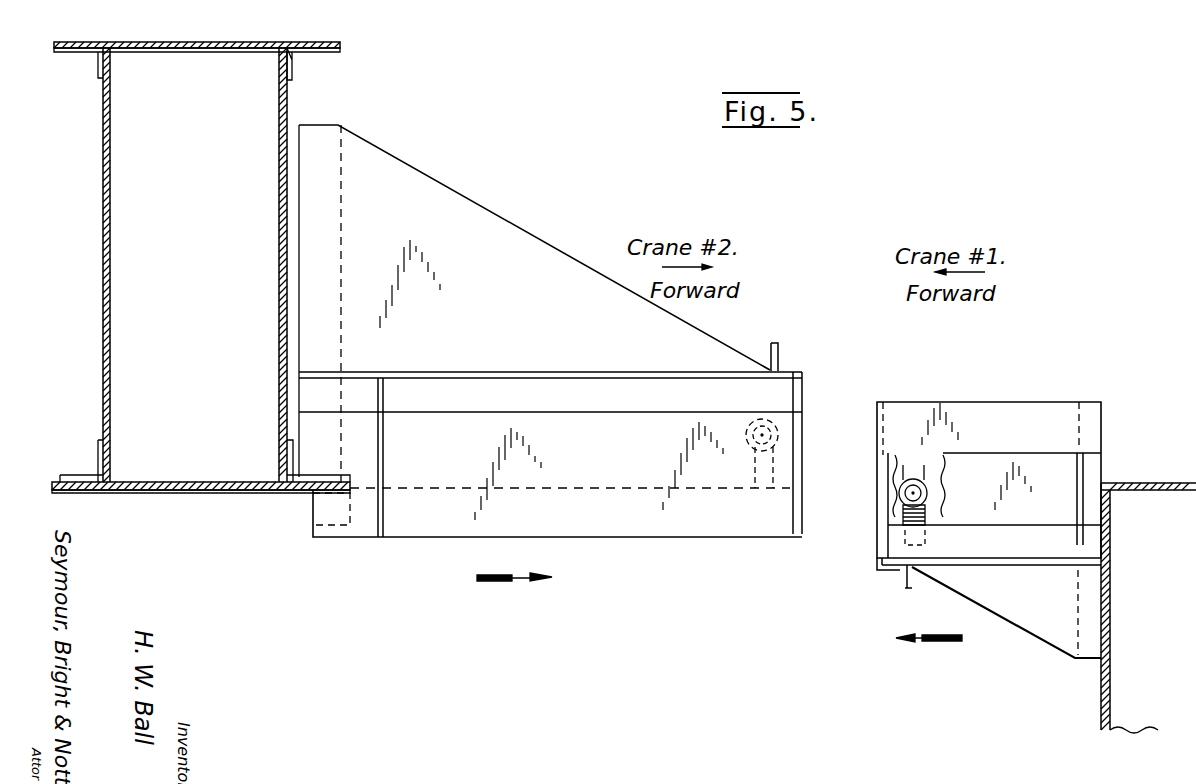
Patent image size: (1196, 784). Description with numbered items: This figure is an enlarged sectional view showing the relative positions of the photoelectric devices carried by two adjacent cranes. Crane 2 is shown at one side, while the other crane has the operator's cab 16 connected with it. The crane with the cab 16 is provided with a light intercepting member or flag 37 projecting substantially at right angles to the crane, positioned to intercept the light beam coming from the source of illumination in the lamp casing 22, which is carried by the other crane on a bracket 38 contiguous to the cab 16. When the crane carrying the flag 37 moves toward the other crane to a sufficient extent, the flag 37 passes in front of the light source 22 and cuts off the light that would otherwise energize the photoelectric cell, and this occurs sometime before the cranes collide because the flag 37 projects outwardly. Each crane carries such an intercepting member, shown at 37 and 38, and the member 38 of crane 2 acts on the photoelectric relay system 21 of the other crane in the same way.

The crane 2 is at (105, 255).
The operator's cab 16 is at (1102, 696).
The photoelectric relay system 21 is at (905, 490).
The lamp casing 22 is at (782, 432).
The light intercepting member or flag 37 is at (1000, 410).
The bracket 38 is at (550, 262).